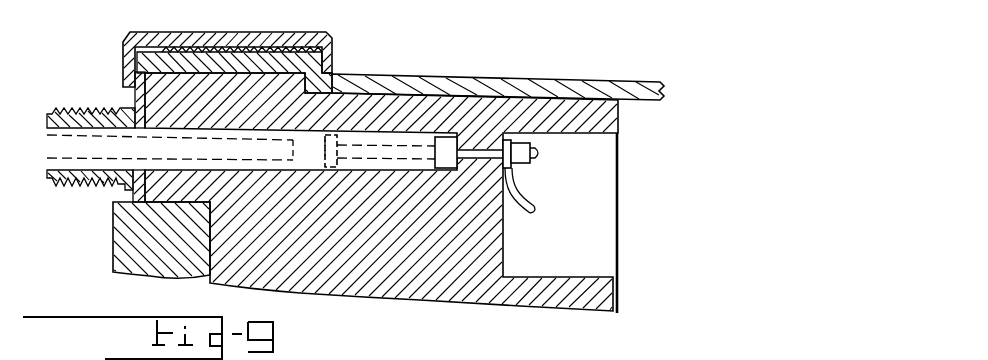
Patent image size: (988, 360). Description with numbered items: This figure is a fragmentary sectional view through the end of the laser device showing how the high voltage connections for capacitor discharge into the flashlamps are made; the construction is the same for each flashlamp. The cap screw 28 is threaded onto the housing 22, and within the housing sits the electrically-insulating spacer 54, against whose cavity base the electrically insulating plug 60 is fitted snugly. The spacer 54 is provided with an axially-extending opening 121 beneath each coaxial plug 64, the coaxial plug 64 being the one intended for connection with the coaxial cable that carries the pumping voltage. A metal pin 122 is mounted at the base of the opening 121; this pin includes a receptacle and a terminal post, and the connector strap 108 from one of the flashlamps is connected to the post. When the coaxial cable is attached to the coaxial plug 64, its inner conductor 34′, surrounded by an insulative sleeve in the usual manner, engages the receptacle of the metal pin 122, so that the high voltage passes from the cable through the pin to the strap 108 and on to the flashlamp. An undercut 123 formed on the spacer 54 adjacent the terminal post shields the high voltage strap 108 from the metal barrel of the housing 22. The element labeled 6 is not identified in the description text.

The flange of threaded sleeve 6 is at (133, 93).
The housing 22 is at (430, 85).
The cap screw 28 is at (238, 31).
The inner conductor 34′ is at (377, 160).
The electrically-insulating spacer 54 is at (292, 238).
The plug 60 is at (118, 223).
The coaxial plug 64 is at (47, 172).
The connector strap 108 is at (520, 219).
The axially-extending opening 121 is at (302, 131).
The metal pin 122 is at (478, 145).
The undercut 123 is at (606, 136).